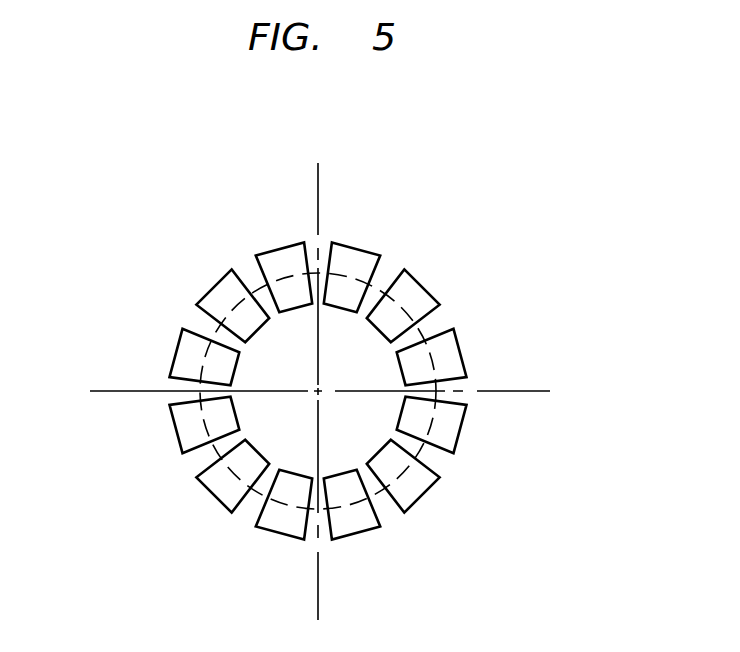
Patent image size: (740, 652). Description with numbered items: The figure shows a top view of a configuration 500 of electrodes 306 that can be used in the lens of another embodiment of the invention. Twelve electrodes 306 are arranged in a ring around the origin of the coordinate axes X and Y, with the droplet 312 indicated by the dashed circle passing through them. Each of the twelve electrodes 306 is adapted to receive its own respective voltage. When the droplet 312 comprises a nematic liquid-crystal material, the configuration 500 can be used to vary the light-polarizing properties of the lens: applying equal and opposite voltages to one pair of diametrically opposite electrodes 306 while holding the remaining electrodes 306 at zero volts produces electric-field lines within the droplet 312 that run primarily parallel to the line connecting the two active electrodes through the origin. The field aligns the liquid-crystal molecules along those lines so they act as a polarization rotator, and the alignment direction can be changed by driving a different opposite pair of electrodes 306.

The configuration of electrodes 500 is at (337, 97).
The droplet 312 is at (430, 330).
The electrodes 306 is at (316, 396).